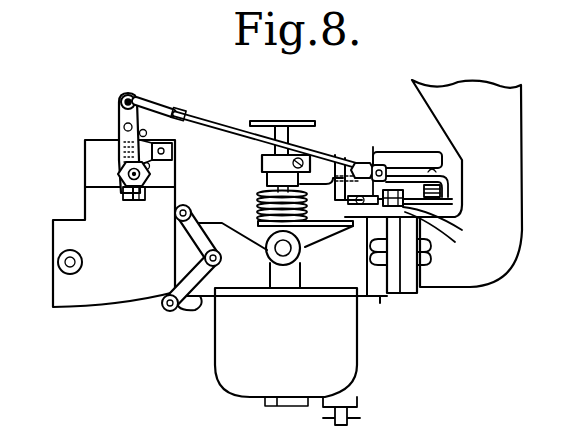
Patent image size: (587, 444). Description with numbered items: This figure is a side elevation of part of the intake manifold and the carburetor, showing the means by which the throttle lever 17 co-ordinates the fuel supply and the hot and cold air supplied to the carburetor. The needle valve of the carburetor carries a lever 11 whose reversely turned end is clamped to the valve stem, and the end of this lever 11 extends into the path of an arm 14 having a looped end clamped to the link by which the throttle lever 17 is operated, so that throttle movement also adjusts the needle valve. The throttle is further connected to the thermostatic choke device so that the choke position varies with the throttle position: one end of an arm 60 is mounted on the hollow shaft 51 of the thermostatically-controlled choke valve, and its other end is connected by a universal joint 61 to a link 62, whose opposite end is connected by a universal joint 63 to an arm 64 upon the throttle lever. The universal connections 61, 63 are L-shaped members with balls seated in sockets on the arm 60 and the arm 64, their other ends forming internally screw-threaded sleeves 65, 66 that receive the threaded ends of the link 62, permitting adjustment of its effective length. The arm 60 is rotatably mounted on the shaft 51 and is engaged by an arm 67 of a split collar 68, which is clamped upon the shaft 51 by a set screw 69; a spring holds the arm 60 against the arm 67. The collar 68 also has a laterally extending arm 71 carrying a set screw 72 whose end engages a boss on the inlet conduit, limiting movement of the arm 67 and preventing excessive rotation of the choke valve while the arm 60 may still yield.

The lever 11 is at (401, 155).
The arm 14 is at (374, 150).
The throttle lever 17 is at (446, 213).
The hollow shaft 51 is at (122, 176).
The arm 60 is at (120, 133).
The universal joint 61 is at (136, 98).
The link 62 is at (208, 124).
The universal joint 63 is at (444, 226).
The arm 64 is at (429, 234).
The internally screw-threaded sleeve 65 is at (167, 110).
The internally screw-threaded sleeve 66 is at (360, 162).
The arm 67 is at (151, 131).
The split collar 68 is at (128, 201).
The set screw 69 is at (142, 201).
The laterally extending arm 71 is at (168, 157).
The set screw 72 is at (173, 145).